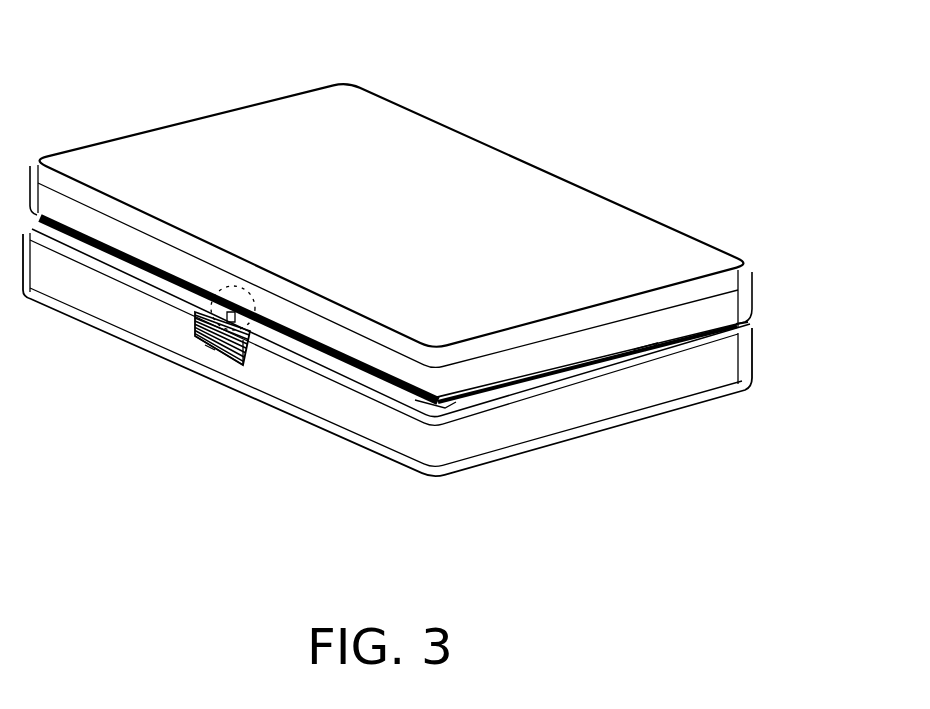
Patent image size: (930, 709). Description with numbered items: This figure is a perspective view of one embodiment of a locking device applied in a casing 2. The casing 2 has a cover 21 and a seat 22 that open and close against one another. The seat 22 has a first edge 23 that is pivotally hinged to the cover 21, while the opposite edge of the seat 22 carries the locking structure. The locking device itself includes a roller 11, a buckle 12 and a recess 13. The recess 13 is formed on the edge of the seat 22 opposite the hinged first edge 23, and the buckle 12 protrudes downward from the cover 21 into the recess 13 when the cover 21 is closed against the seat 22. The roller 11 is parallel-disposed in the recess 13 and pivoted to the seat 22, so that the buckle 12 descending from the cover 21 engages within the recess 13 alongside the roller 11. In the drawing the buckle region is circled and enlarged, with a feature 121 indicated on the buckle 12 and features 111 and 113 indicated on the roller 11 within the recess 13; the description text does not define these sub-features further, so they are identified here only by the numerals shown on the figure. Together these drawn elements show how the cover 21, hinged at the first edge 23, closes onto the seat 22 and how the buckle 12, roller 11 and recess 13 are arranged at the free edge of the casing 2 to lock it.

The casing 2 is at (575, 163).
The cover 21 is at (467, 167).
The seat 22 is at (630, 387).
The first edge 23 is at (743, 321).
The roller 11 is at (187, 322).
The buckle 12 is at (232, 305).
The slot key 121 is at (240, 316).
The recess 13 is at (193, 343).
The contact portion 111 is at (212, 353).
The side wall 113 is at (242, 365).